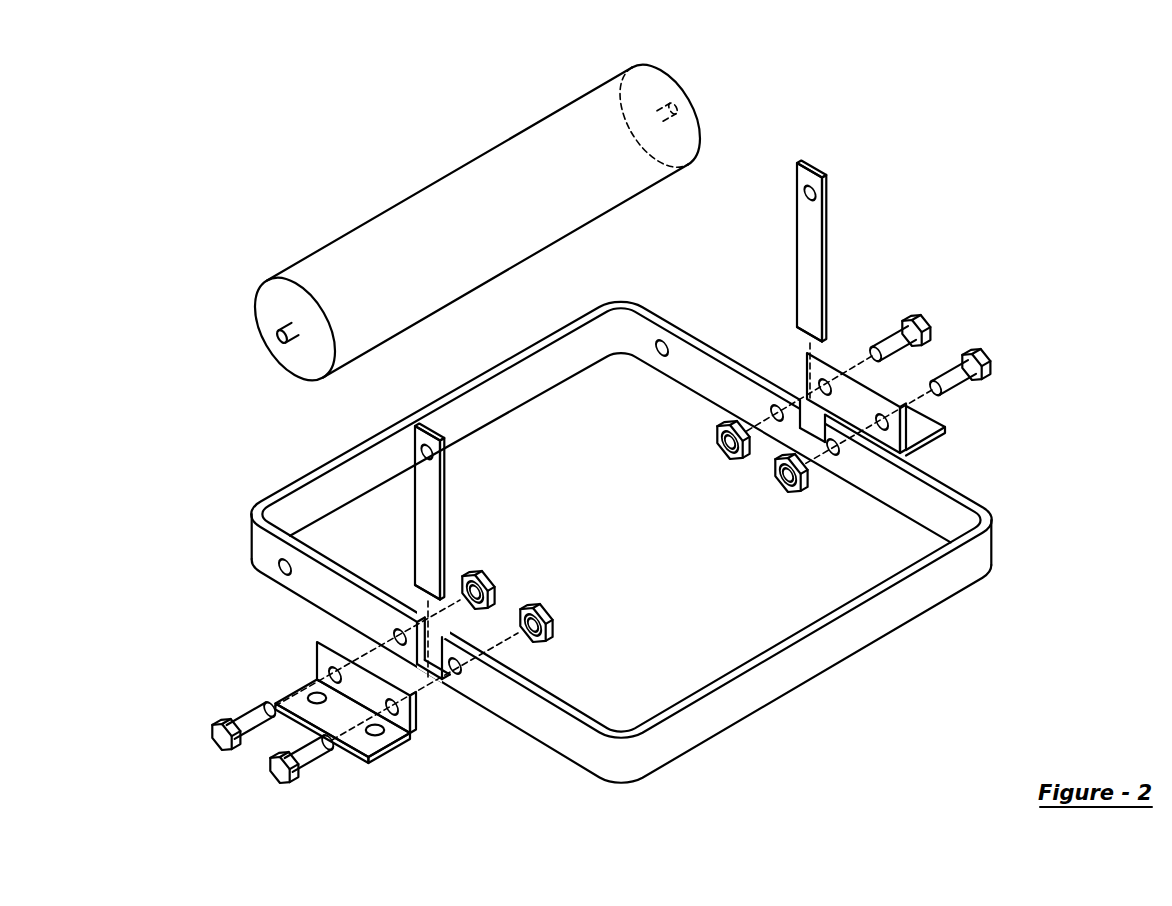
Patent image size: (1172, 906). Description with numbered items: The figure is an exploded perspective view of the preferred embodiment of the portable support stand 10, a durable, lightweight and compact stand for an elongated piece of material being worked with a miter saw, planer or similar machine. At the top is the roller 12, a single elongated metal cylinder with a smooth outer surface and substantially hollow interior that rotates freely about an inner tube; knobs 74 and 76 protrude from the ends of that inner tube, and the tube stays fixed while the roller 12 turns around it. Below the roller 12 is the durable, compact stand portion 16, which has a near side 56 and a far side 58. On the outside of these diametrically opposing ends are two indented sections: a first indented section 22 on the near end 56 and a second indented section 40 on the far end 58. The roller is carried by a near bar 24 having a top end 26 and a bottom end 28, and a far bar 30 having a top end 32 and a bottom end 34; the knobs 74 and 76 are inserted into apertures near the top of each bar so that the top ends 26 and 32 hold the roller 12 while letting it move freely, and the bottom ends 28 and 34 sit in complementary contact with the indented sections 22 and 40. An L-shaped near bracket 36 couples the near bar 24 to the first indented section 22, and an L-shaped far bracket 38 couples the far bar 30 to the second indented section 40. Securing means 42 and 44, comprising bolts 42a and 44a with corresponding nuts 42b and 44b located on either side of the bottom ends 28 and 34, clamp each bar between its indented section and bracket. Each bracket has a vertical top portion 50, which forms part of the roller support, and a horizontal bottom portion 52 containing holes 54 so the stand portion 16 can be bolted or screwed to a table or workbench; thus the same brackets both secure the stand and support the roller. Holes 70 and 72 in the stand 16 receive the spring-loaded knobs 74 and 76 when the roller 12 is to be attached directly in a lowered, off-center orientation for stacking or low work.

The support stand 10 is at (144, 259).
The roller 12 is at (428, 252).
The stand portion 16 is at (266, 496).
The first indented section 22 is at (420, 619).
The near bar 24 is at (468, 507).
The top end of near bar 26 is at (424, 426).
The bottom end of near bar 28 is at (444, 590).
The far bar 30 is at (783, 257).
The top end of far bar 32 is at (813, 166).
The bottom end of far bar 34 is at (797, 328).
The near bracket 36 is at (272, 679).
The far bracket 38 is at (960, 421).
The second indented section 40 is at (817, 412).
The securing means 42 is at (310, 818).
The bolts 42a is at (215, 730).
The nuts 42b is at (490, 592).
The securing means 44 is at (808, 522).
The bolts 44a is at (928, 331).
The nuts 44b is at (712, 441).
The vertical top portion 50 is at (323, 659).
The horizontal bottom portion 52 is at (402, 743).
The holes 54 is at (368, 739).
The near side 56 is at (557, 751).
The far side 58 is at (657, 306).
The hole 70 is at (250, 568).
The hole 72 is at (669, 343).
The knob 74 is at (270, 334).
The knob 76 is at (680, 108).